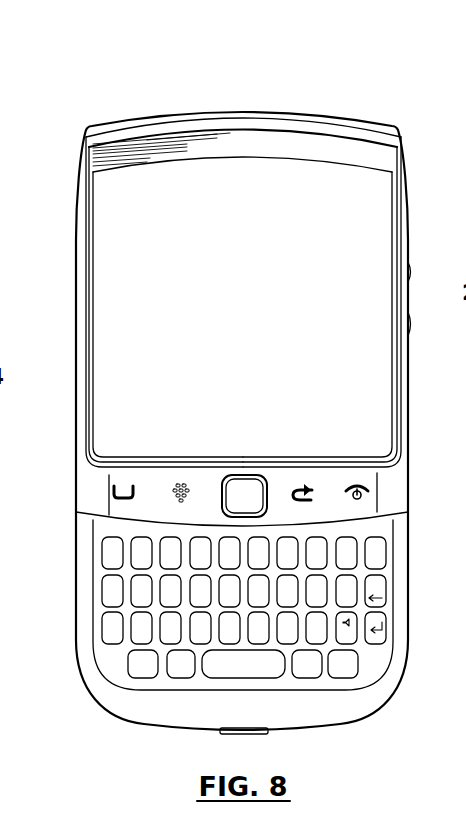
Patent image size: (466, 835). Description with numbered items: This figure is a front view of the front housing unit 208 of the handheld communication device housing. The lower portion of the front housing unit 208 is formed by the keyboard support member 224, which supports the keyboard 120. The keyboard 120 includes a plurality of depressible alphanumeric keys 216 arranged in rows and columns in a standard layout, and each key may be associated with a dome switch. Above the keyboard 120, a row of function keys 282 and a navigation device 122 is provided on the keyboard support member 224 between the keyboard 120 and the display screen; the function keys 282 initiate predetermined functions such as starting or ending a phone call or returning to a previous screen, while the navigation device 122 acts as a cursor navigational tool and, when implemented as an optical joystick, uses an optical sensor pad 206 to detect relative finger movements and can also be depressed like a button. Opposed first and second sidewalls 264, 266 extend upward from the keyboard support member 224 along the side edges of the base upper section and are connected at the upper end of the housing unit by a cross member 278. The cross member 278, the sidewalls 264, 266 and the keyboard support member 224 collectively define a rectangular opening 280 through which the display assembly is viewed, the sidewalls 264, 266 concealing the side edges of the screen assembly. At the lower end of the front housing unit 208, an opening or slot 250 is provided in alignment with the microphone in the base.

The front housing unit 208 is at (365, 101).
The cross member 278 is at (267, 148).
The first sidewall 264 is at (85, 280).
The second sidewall 266 is at (400, 298).
The rectangular opening 280 is at (224, 337).
The optical sensor pad 206 is at (228, 478).
The navigation device 122 is at (250, 480).
The function keys 282 is at (123, 483).
The depressible alphanumeric keys 216 is at (107, 628).
The keyboard support member 224 is at (238, 617).
The keyboard 120 is at (238, 626).
The opening or slot 250 is at (247, 736).